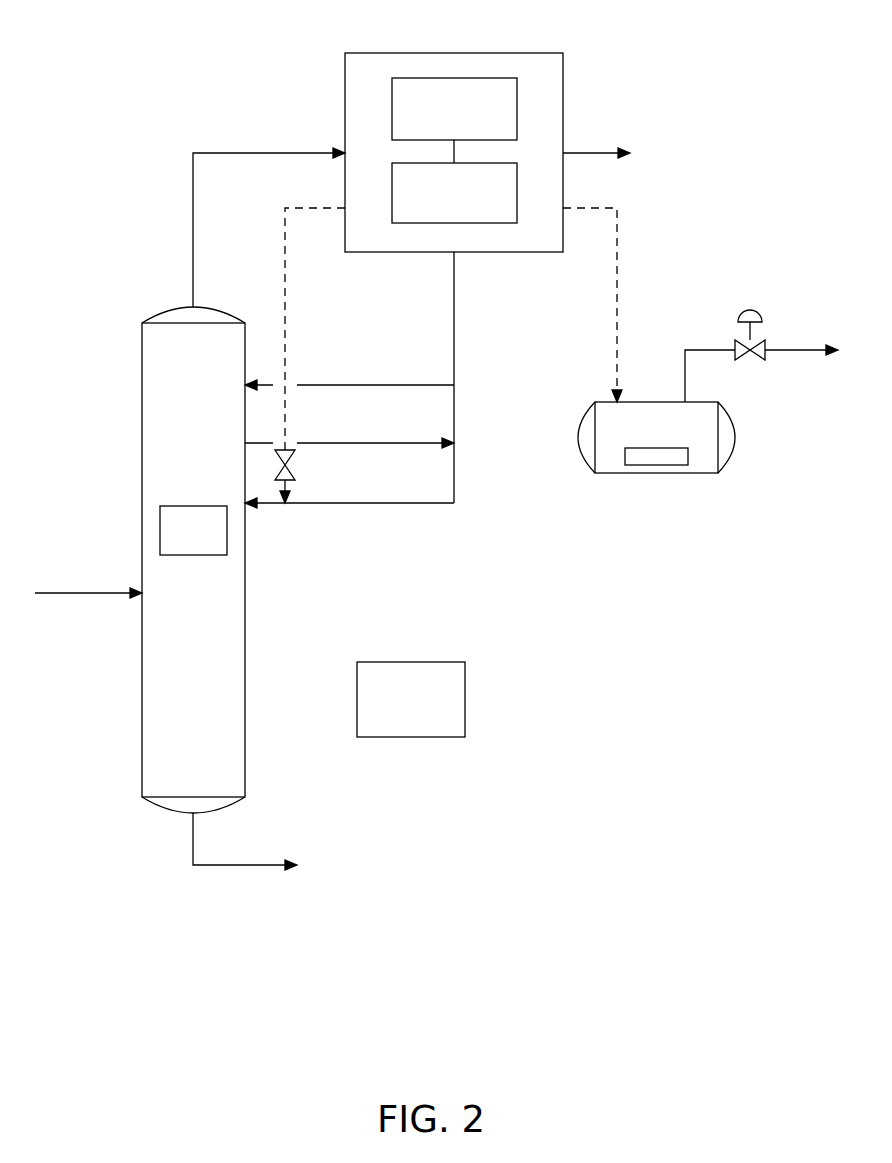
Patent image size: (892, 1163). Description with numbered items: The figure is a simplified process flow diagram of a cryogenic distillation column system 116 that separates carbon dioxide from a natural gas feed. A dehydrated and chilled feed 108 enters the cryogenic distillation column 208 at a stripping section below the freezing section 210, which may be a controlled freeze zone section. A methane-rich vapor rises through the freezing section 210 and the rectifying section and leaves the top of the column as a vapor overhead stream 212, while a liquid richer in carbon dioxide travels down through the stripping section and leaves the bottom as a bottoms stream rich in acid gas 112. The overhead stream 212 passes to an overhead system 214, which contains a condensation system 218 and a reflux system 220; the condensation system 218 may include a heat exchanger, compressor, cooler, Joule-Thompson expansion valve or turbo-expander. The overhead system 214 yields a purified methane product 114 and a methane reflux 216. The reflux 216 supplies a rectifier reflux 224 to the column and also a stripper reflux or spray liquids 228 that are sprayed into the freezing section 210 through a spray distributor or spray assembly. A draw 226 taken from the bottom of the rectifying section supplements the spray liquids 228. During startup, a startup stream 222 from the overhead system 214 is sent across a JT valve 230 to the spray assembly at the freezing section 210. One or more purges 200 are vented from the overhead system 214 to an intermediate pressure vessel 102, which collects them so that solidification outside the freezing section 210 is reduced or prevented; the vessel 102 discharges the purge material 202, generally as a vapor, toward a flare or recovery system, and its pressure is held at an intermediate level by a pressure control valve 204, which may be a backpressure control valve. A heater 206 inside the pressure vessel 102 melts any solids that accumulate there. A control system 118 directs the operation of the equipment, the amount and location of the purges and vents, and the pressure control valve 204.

The intermediate pressure vessel 102 is at (697, 473).
The feed 108 is at (97, 593).
The bottoms stream rich in acid gas 112 is at (240, 865).
The product 114 is at (592, 153).
The cryogenic distillation column system 116 is at (452, 1087).
The control system 118 is at (428, 709).
The purges 200 is at (617, 250).
The purge material 202 is at (796, 352).
The pressure control valve 204 is at (750, 310).
The heater 206 is at (652, 465).
The cryogenic distillation column 208 is at (142, 366).
The freezing section 210 is at (228, 540).
The vapor overhead stream 212 is at (262, 153).
The overhead system 214 is at (398, 53).
The methane reflux 216 is at (457, 320).
The condensation system 218 is at (487, 78).
The reflux system 220 is at (497, 223).
The startup stream 222 is at (287, 312).
The rectifier reflux 224 is at (360, 385).
The draw 226 is at (355, 443).
The spray liquids 228 is at (385, 503).
The JT valve 230 is at (292, 458).